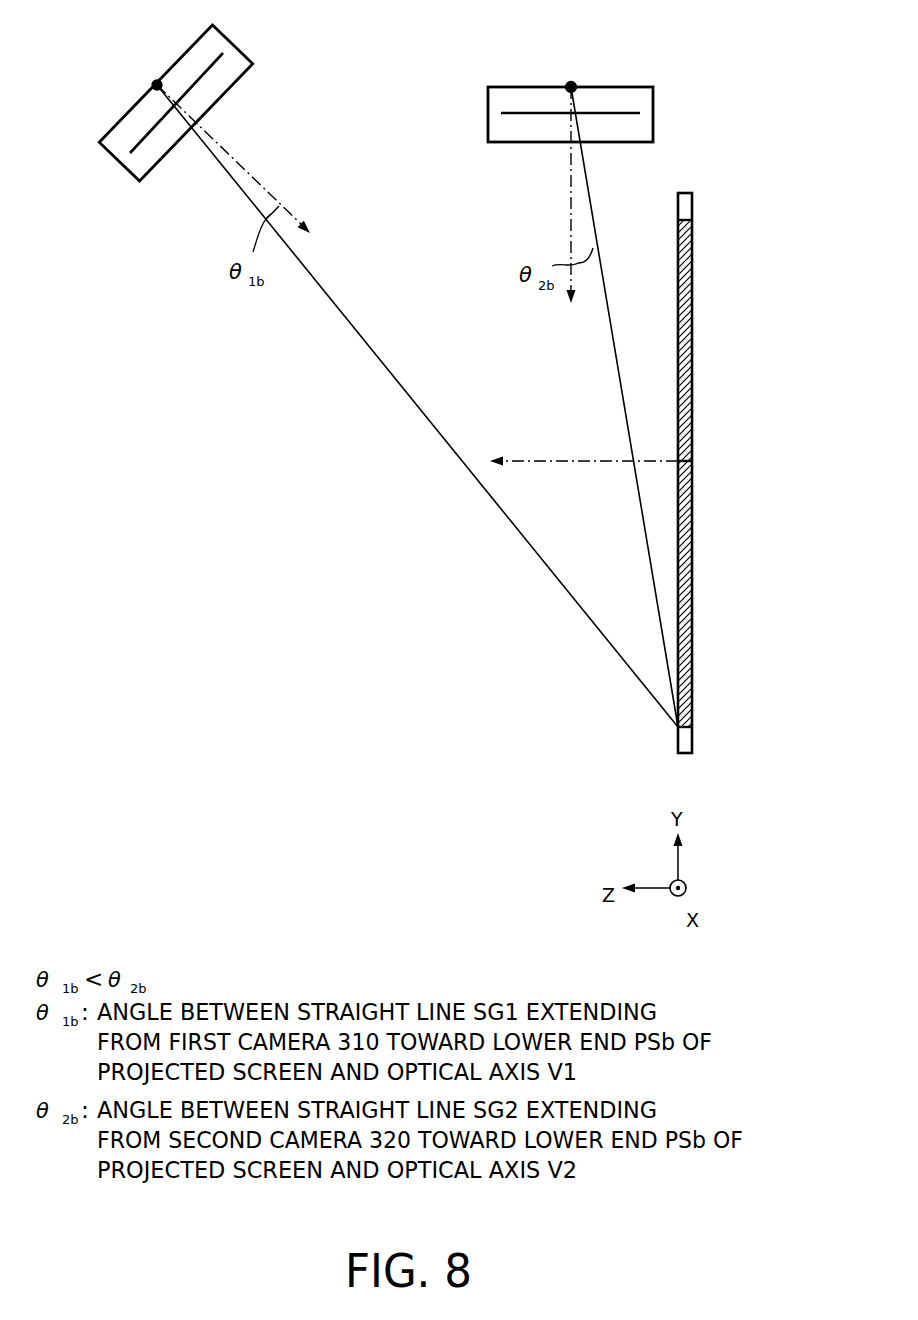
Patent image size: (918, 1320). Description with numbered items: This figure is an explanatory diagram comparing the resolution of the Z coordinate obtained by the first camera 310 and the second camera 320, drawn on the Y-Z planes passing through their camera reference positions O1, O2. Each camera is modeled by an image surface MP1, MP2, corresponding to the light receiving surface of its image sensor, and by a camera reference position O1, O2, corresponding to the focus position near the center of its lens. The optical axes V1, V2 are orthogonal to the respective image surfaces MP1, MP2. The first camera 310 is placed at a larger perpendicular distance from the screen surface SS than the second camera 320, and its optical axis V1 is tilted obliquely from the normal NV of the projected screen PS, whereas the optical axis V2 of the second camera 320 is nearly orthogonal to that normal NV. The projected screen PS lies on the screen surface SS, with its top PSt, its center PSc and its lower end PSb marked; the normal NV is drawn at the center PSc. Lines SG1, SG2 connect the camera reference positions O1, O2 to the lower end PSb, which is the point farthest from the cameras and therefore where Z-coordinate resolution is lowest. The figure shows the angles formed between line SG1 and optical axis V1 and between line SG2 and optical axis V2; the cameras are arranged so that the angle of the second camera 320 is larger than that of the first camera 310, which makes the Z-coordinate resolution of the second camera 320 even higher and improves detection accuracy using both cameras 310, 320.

The first camera 310 is at (230, 33).
The second camera 320 is at (625, 87).
The image surface MP1 is at (138, 145).
The image surface MP2 is at (523, 112).
The camera reference position O1 is at (157, 82).
The camera reference position O2 is at (571, 82).
The optical axis V1 is at (238, 160).
The optical axis V2 is at (570, 213).
The line SG1 is at (392, 375).
The line SG2 is at (612, 352).
The screen surface SS is at (679, 206).
The projected screen PS is at (678, 318).
The upper end of projected screen PSt is at (692, 220).
The center of projected screen PSc is at (692, 461).
The lower end of projected screen PSb is at (692, 727).
The normal of projected screen NV is at (584, 451).